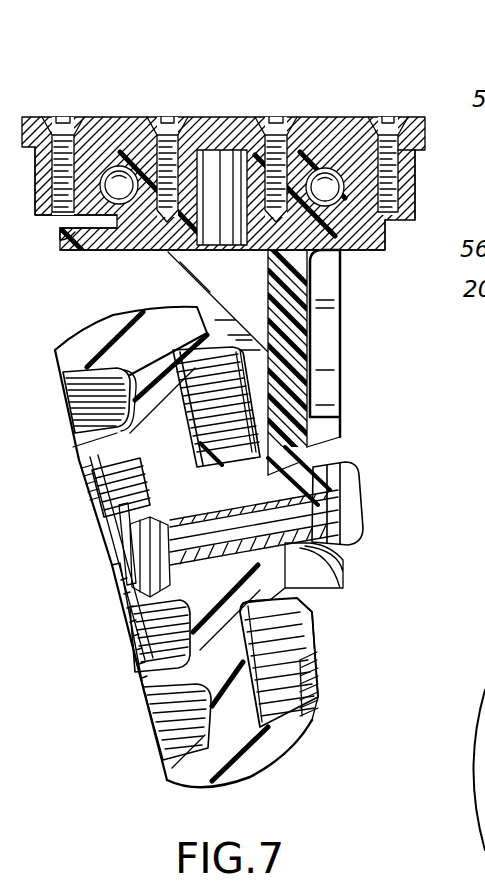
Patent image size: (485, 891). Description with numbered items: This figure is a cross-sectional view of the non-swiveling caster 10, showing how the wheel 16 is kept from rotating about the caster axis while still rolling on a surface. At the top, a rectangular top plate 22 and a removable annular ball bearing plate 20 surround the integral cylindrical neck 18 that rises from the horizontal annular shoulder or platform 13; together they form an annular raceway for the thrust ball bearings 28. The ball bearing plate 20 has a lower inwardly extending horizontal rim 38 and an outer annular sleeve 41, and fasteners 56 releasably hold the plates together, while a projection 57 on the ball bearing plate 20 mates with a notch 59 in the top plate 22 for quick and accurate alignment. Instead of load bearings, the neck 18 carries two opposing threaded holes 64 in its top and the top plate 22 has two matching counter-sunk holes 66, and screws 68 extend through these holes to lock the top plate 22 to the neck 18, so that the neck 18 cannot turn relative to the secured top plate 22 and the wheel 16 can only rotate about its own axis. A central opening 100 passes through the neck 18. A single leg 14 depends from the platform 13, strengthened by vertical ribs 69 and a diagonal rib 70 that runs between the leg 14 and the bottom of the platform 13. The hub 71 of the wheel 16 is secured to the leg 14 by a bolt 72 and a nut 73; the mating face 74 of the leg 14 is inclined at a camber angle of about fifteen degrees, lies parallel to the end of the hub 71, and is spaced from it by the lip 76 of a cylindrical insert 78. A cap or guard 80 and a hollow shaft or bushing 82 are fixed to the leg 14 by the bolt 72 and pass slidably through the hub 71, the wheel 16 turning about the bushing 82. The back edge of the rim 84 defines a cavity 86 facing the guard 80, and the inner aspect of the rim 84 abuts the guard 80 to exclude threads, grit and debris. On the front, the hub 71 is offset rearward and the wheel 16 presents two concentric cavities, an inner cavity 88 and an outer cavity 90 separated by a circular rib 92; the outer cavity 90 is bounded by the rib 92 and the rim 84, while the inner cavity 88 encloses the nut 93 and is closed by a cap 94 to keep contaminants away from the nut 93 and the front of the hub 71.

The caster 10 is at (313, 54).
The platform 13 is at (70, 233).
The leg 14 is at (314, 352).
The wheel 16 is at (294, 764).
The neck 18 is at (106, 246).
The ball bearing plate 20 is at (419, 172).
The top plate 22 is at (355, 111).
The thrust ball bearings 28 is at (106, 180).
The rim 38 is at (386, 237).
The outer annular sleeve 41 is at (411, 196).
The screw 56 is at (63, 137).
The projection 57 is at (122, 135).
The notch 59 is at (100, 150).
The threaded holes 64 is at (152, 238).
The counter-sunk holes 66 is at (228, 172).
The screws 68 is at (160, 165).
The vertical ribs 69 is at (340, 300).
The diagonal rib 70 is at (186, 268).
The hub 71 is at (290, 605).
The bolt 72 is at (332, 505).
The nut 73 is at (356, 488).
The mating face 74 is at (283, 582).
The lip 76 is at (334, 443).
The cylindrical insert 78 is at (346, 564).
The guard 80 is at (314, 670).
The bushing 82 is at (122, 638).
The rim 84 is at (314, 727).
The cavity 86 is at (280, 685).
The inner cavity 88 is at (80, 417).
The outer cavity 90 is at (112, 498).
The circular rib 92 is at (105, 442).
The nut 93 is at (130, 587).
The cap 94 is at (94, 547).
The central opening 100 is at (243, 170).